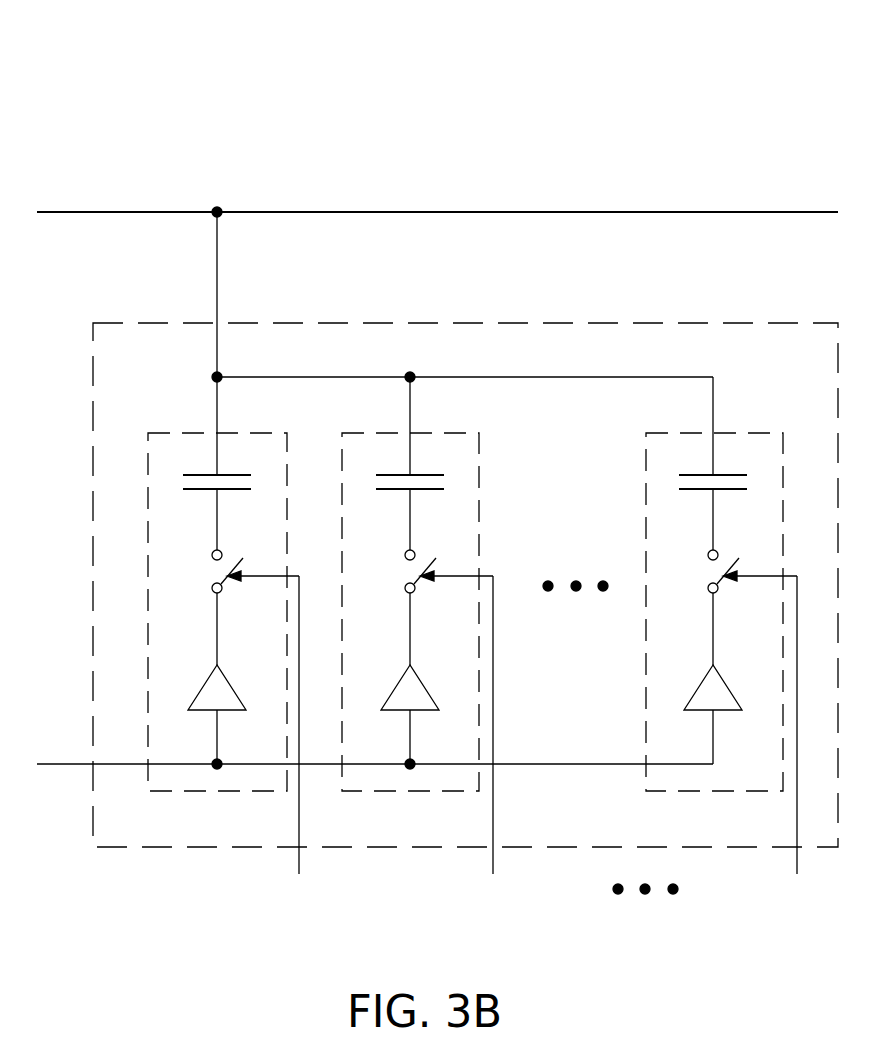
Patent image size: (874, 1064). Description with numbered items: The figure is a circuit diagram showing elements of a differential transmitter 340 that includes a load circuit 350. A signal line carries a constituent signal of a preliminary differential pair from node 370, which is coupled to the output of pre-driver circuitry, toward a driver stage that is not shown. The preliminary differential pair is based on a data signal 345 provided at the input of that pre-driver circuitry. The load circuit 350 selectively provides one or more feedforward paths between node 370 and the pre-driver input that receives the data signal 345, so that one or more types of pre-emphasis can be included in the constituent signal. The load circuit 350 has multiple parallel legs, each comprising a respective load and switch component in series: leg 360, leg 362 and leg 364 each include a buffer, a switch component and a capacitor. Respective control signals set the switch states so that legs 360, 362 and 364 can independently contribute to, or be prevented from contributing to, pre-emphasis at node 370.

The differential transmitter 340 is at (684, 87).
The data signal 345 is at (365, 755).
The load circuit 350 is at (822, 318).
The leg 360 is at (267, 429).
The leg 362 is at (460, 429).
The leg 364 is at (763, 429).
The node 370 is at (218, 194).